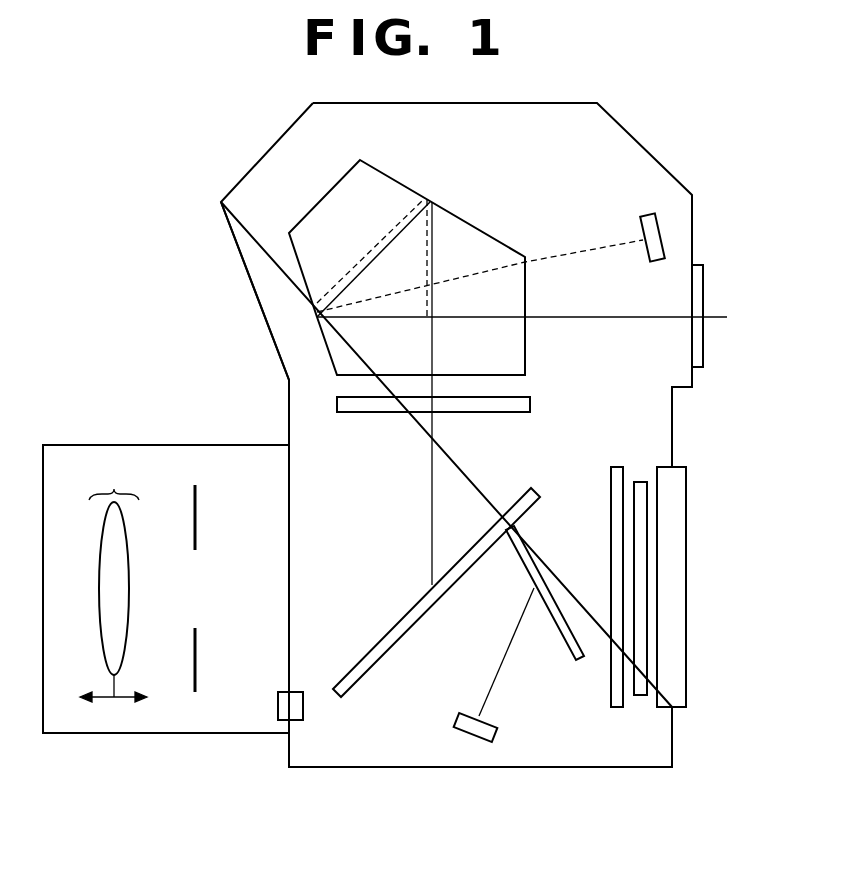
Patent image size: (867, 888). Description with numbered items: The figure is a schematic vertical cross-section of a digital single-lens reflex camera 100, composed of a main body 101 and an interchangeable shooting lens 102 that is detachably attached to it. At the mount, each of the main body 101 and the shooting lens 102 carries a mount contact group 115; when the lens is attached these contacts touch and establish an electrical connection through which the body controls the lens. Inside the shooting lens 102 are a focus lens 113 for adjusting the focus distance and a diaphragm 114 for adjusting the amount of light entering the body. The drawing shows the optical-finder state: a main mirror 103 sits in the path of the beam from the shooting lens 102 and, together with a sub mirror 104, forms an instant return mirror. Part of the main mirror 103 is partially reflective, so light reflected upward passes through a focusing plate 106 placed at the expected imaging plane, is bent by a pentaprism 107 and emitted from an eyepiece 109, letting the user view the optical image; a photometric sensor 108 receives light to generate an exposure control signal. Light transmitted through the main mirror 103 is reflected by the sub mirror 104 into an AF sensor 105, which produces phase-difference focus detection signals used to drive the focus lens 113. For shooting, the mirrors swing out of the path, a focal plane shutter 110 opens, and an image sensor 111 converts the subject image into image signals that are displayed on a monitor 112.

The digital single-lens reflex camera 100 is at (451, 776).
The main body 101 is at (262, 157).
The shooting lens 102 is at (185, 445).
The main mirror 103 is at (357, 684).
The sub mirror 104 is at (555, 598).
The AF sensor 105 is at (470, 712).
The focusing plate 106 is at (532, 403).
The pentaprism 107 is at (465, 220).
The photometric sensor 108 is at (647, 215).
The eyepiece 109 is at (706, 285).
The focal plane shutter 110 is at (609, 697).
The image sensor 111 is at (641, 482).
The monitor 112 is at (675, 708).
The focus lens 113 is at (114, 489).
The diaphragm 114 is at (195, 672).
The mount contact group 115 is at (280, 692).